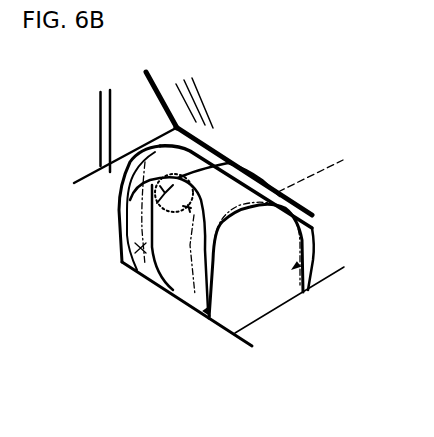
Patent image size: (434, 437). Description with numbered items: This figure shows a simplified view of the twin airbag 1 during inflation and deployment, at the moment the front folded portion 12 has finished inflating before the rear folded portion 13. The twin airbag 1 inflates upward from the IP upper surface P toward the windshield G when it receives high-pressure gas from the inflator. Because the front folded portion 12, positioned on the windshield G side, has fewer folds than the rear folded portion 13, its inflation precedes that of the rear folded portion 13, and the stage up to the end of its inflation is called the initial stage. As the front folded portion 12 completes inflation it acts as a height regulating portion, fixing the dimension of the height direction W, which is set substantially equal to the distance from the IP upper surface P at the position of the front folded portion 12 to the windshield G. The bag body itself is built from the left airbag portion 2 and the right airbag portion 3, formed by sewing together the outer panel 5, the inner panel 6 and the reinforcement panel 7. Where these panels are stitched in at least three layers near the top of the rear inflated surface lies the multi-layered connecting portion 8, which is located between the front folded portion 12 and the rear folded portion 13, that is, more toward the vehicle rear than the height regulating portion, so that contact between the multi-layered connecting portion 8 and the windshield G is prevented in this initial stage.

The twin airbag 1 is at (236, 122).
The left airbag portion 2 is at (100, 172).
The right airbag portion 3 is at (324, 277).
The outer panel 5 is at (250, 265).
The inner panel 6 is at (123, 262).
The reinforcement panel 7 is at (262, 178).
The multi-layered connecting portion 8 is at (163, 176).
The front folded portion 12 is at (254, 156).
The rear folded portion 13 is at (104, 229).
The windshield G is at (157, 80).
The IP upper surface P is at (251, 346).
The height direction dimension W is at (335, 170).